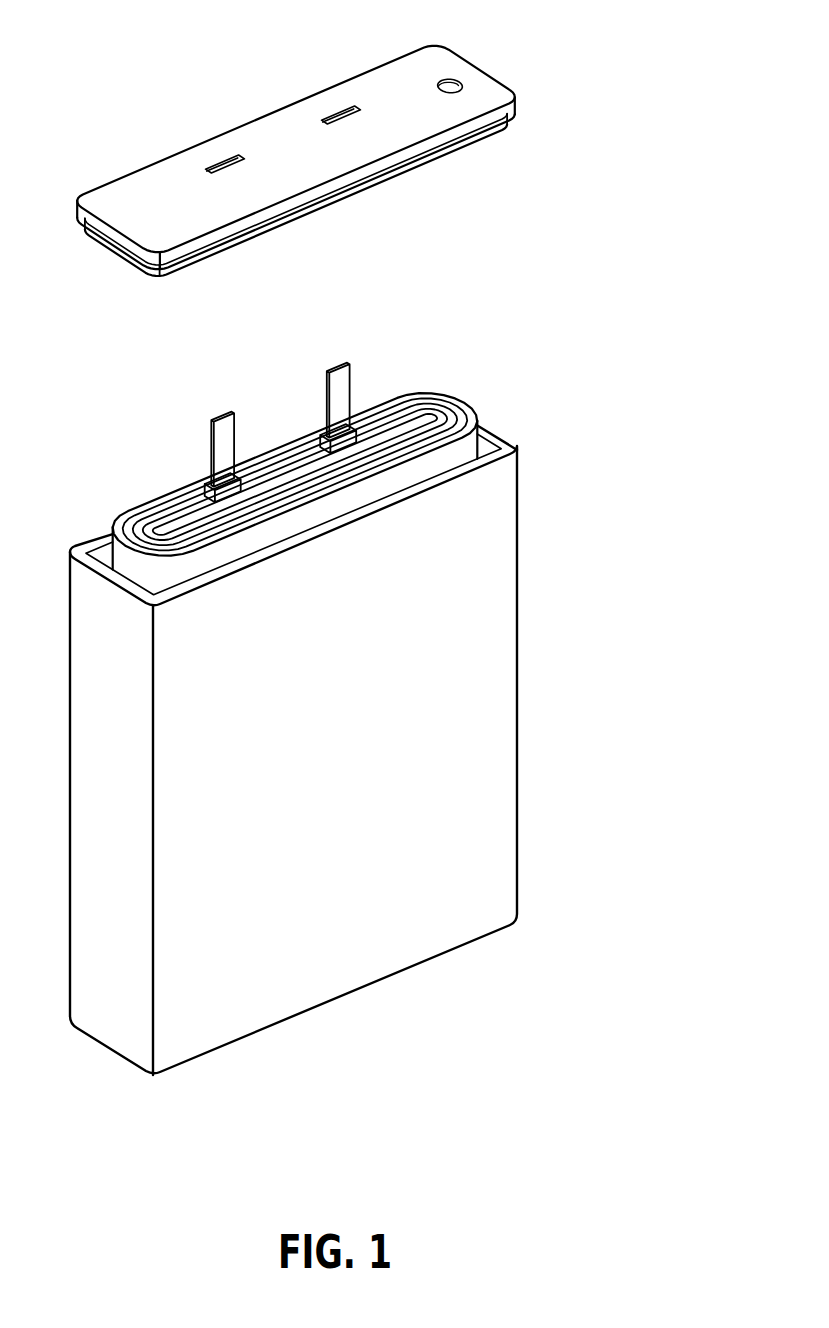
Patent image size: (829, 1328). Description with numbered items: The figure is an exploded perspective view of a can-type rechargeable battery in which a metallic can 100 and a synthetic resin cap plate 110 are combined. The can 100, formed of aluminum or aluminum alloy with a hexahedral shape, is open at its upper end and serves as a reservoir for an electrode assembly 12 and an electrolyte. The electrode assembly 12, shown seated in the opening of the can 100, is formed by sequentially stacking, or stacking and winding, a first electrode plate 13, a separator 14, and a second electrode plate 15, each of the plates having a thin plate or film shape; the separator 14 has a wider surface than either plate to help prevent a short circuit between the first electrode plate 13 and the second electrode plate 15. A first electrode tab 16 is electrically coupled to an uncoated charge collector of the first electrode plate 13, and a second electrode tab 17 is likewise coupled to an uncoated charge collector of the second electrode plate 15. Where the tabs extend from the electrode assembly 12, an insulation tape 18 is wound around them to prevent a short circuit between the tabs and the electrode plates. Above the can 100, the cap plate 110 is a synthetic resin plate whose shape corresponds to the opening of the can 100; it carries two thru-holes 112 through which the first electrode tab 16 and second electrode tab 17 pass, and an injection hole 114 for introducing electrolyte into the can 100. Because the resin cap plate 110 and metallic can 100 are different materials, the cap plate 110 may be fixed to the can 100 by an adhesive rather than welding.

The can 100 is at (495, 676).
The cap plate 110 is at (312, 138).
The thru-holes 112 is at (338, 110).
The injection hole 114 is at (453, 80).
The electrode assembly 12 is at (340, 413).
The first electrode plate 13 is at (295, 419).
The separator 14 is at (457, 410).
The second electrode plate 15 is at (473, 417).
The first electrode tab 16 is at (228, 430).
The second electrode tab 17 is at (347, 380).
The insulation tape 18 is at (227, 487).